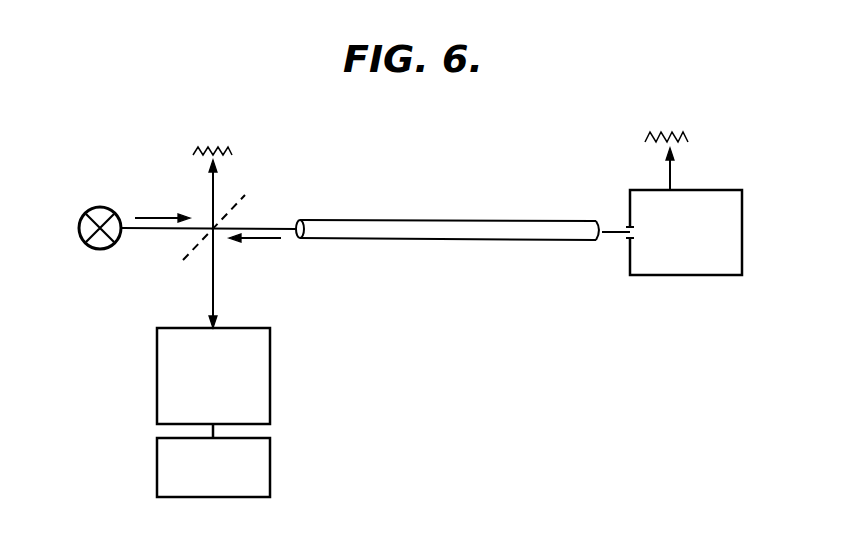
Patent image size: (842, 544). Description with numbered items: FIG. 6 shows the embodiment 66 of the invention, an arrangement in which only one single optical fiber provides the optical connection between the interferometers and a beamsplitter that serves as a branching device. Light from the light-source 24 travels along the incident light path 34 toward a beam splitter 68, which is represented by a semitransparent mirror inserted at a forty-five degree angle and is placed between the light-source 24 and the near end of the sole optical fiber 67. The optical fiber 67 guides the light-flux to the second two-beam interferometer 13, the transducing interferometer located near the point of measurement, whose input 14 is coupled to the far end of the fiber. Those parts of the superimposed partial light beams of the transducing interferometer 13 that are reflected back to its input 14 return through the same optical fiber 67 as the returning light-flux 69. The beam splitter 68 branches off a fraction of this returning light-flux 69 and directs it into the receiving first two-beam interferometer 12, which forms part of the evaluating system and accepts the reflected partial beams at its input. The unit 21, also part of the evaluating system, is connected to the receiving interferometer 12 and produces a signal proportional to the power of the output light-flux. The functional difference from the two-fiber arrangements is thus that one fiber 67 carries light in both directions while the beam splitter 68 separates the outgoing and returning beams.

The light-source 24 is at (106, 207).
The incident light beam 34 is at (150, 217).
The beam splitter 68 is at (197, 247).
The returning light-flux 69 is at (260, 240).
The embodiment 66 is at (447, 202).
The sole optical fiber 67 is at (388, 240).
The input 14 is at (627, 226).
The second two-beam interferometer 13 is at (686, 267).
The first two-beam interferometer 12 is at (162, 395).
The unit 21 is at (162, 460).